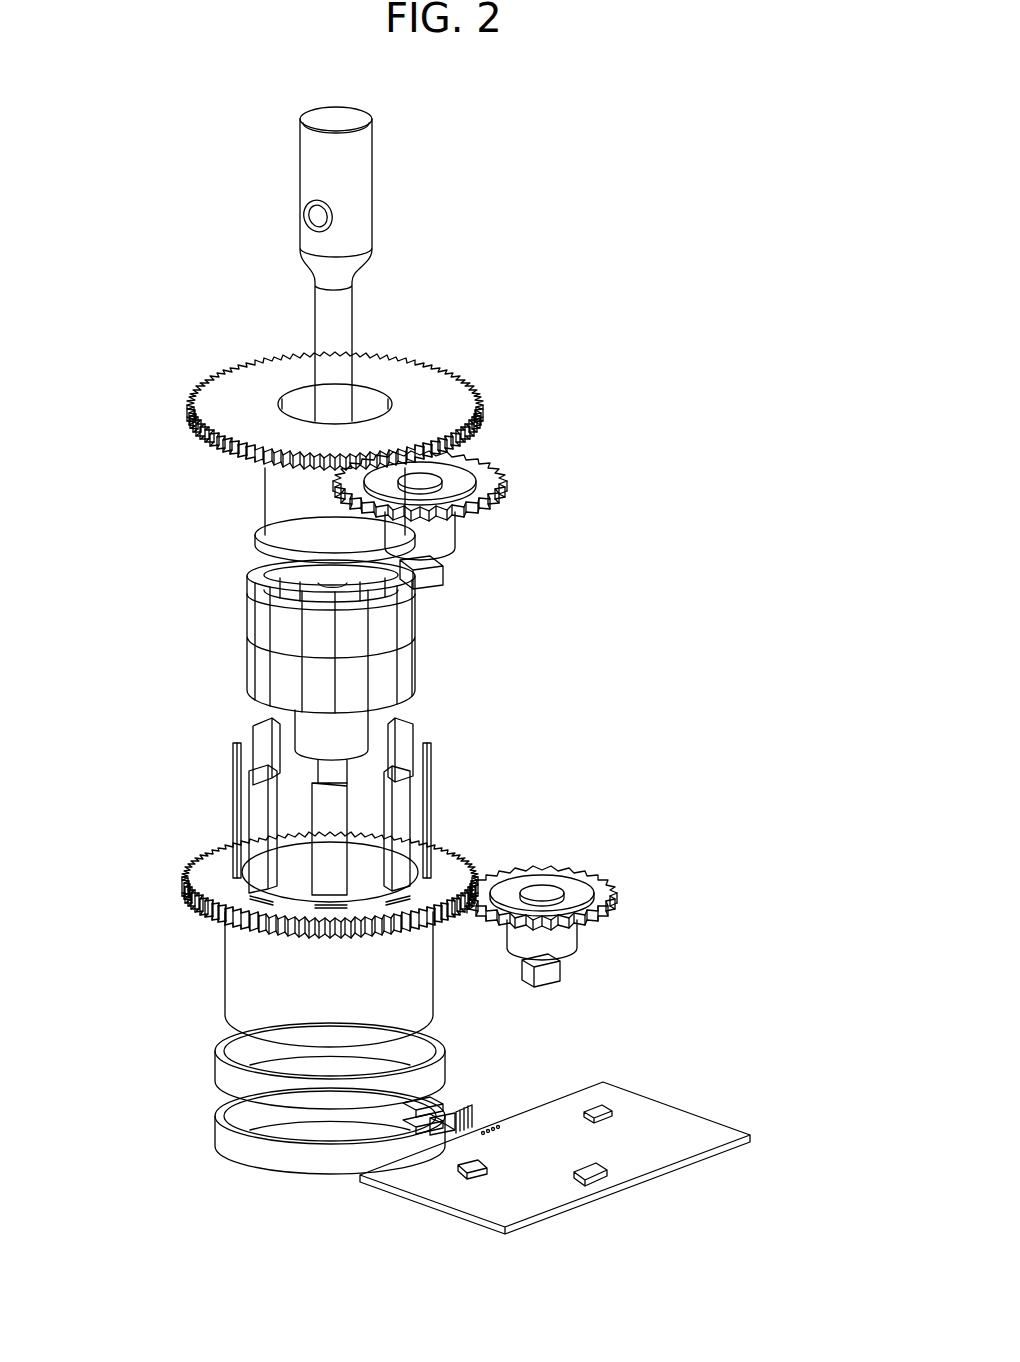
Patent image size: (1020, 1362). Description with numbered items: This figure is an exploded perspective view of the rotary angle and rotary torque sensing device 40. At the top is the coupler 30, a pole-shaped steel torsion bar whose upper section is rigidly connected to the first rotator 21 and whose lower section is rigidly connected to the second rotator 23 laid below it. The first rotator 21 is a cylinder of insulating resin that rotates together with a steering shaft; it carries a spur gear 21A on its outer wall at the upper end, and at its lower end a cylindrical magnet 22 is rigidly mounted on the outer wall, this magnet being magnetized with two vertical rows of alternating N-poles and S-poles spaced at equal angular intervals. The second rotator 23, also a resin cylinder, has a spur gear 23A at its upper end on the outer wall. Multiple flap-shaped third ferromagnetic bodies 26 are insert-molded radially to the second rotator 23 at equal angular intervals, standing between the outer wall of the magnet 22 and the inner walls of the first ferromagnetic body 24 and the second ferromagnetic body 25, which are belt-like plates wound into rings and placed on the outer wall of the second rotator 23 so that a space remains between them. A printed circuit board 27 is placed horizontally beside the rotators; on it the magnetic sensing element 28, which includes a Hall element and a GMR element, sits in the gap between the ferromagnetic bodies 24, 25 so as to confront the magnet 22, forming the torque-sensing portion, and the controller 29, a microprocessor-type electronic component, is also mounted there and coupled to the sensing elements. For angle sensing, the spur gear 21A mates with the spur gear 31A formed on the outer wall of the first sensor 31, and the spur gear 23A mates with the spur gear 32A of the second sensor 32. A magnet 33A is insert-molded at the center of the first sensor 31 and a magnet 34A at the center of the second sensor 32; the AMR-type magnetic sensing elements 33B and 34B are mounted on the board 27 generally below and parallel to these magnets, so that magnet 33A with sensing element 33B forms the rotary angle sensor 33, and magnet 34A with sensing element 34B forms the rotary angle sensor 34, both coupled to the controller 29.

The first rotator 21 is at (310, 448).
The spur gear 21A is at (190, 400).
The magnet 22 is at (250, 610).
The second rotator 23 is at (276, 939).
The spur gear 23A is at (185, 882).
The first ferromagnetic body 24 is at (215, 1055).
The second ferromagnetic body 25 is at (215, 1115).
The third ferromagnetic body 26 is at (253, 728).
The printed circuit board 27 is at (683, 1167).
The magnetic sensing element 28 is at (455, 1138).
The controller 29 is at (590, 1180).
The coupler 30 is at (345, 334).
The first sensor 31 is at (469, 502).
The spur gear 31A is at (502, 500).
The second sensor 32 is at (587, 885).
The spur gear 32A is at (615, 900).
The rotary angle sensor 33 is at (505, 867).
The magnet 33A is at (437, 574).
The magnetic sensing element 33B is at (467, 1165).
The rotary angle sensor 34 is at (617, 1029).
The magnet 34A is at (555, 972).
The magnetic sensing element 34B is at (598, 1110).
The rotary angle and rotary torque sensing device 40 is at (771, 1290).